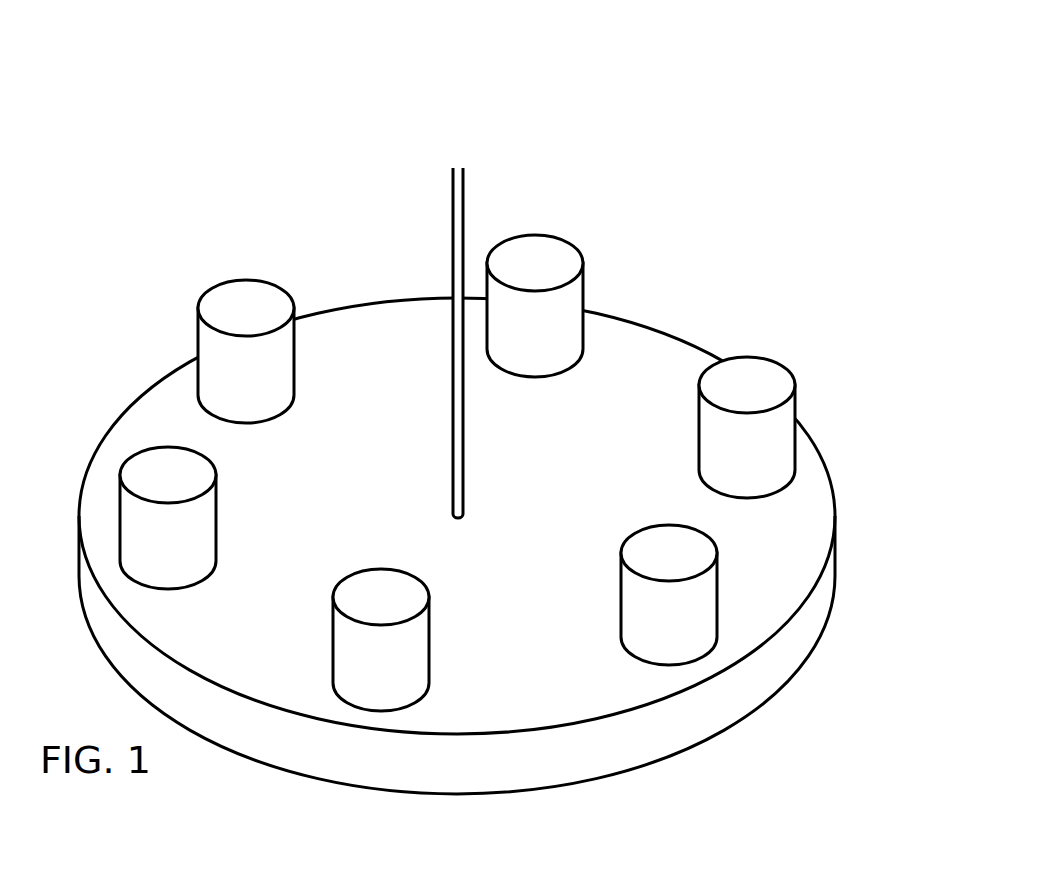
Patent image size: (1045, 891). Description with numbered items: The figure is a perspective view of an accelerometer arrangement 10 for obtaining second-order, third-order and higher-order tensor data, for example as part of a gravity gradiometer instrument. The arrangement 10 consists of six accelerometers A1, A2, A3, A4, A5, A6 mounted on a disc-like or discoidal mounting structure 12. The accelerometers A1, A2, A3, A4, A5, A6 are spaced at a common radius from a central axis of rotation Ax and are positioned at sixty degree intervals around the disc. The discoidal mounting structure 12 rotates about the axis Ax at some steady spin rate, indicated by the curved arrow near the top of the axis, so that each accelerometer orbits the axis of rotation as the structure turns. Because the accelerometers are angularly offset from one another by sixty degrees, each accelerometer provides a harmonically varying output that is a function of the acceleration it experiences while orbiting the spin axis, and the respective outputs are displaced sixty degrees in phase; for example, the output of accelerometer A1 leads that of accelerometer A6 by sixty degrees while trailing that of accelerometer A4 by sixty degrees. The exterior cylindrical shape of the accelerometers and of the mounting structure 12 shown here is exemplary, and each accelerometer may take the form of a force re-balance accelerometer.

The accelerometer arrangement 10 is at (702, 66).
The discoidal mounting structure 12 is at (838, 603).
The accelerometer A1 is at (743, 352).
The accelerometer A2 is at (640, 536).
The accelerometer A3 is at (362, 568).
The accelerometer A4 is at (124, 453).
The accelerometer A5 is at (205, 280).
The accelerometer A6 is at (536, 231).
The axis of rotation Ax is at (450, 401).